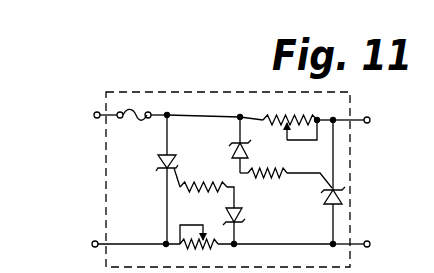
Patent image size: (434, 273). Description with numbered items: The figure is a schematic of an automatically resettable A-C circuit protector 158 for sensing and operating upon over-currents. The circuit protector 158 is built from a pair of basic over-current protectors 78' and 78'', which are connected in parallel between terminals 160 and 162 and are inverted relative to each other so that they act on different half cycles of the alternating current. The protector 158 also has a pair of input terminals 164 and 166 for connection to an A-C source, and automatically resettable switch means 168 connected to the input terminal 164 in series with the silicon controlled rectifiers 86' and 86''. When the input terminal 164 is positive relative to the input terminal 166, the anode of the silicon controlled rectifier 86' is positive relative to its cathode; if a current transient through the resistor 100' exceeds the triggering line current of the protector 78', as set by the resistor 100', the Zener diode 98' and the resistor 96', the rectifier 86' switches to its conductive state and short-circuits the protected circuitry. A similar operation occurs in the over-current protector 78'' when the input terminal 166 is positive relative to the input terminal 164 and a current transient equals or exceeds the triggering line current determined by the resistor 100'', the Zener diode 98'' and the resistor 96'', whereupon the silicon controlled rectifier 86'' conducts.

The A-C over-current protector 158 is at (196, 91).
The terminal 160 is at (369, 116).
The terminal 162 is at (368, 247).
The input terminal 164 is at (94, 114).
The input terminal 166 is at (92, 243).
The automatically resettable switch means 168 is at (133, 104).
The over-current protector 78' is at (181, 190).
The over-current protector 78'' is at (308, 170).
The silicon controlled rectifier 86' is at (147, 179).
The silicon controlled rectifier 86'' is at (354, 182).
The resistor 96' is at (204, 183).
The resistor 96'' is at (286, 182).
The Zener diode 98' is at (214, 222).
The Zener diode 98'' is at (264, 145).
The resistor 100' is at (209, 245).
The resistor 100'' is at (295, 118).